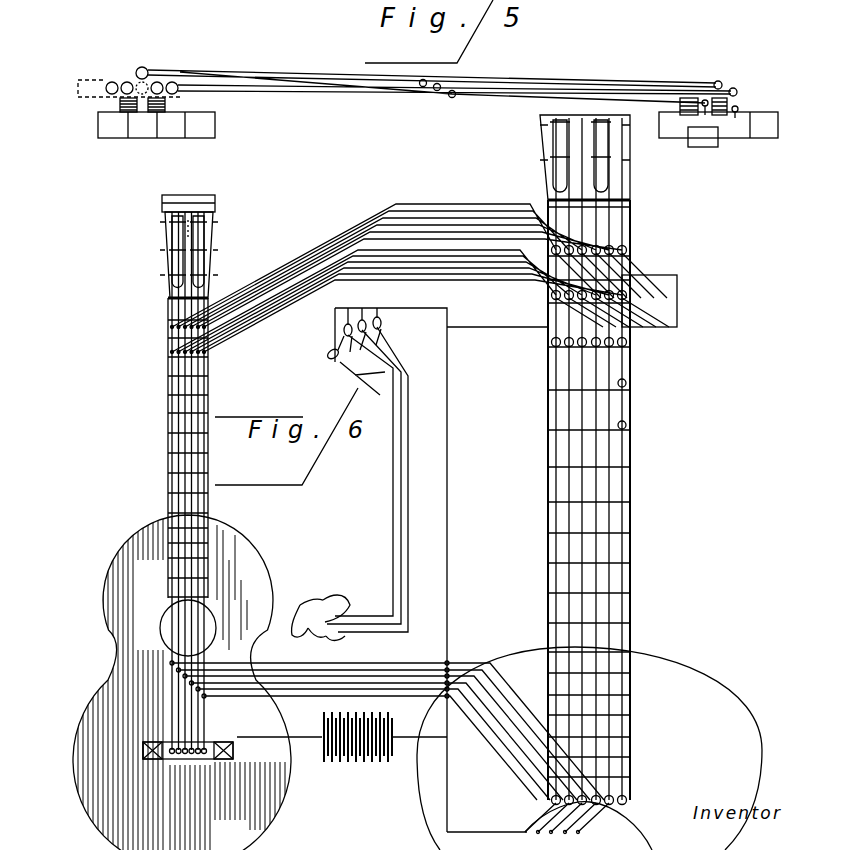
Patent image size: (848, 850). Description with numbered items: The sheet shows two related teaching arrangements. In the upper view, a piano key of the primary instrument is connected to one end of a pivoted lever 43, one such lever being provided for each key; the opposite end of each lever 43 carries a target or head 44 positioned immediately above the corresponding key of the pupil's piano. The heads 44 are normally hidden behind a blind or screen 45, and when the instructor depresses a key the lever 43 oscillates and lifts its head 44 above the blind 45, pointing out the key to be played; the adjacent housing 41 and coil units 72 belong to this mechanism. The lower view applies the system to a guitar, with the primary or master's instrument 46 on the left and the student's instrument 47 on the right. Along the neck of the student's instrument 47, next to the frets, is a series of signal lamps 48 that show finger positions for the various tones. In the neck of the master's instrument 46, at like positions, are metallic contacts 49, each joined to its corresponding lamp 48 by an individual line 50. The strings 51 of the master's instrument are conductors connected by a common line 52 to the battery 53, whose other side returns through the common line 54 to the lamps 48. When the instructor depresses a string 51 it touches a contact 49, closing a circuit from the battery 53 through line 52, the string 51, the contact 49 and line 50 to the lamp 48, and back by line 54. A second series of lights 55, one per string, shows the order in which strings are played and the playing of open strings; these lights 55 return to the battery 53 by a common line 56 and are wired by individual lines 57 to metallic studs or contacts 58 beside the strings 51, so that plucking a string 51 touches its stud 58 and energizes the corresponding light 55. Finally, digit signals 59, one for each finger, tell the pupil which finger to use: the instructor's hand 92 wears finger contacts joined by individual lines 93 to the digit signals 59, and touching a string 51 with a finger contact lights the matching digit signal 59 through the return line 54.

In FIG. 5, the resistance unit 41 is at (764, 133).
In FIG. 5, the pivoted lever 43 is at (321, 66).
In FIG. 5, the target or head 44 is at (131, 68).
In FIG. 5, the blind or screen 45 is at (93, 93).
In FIG. 5, the electromagnet coils 72 is at (183, 100).
In FIG. 6, the primary or master's instrument 46 is at (120, 662).
In FIG. 6, the student's instrument 47 is at (687, 653).
In FIG. 6, the signal lamps 48 is at (628, 262).
In FIG. 6, the metallic contacts 49 is at (175, 329).
In FIG. 6, the individual line 50 is at (453, 217).
In FIG. 6, the strings 51 is at (185, 467).
In FIG. 6, the common line 52 is at (215, 735).
In FIG. 6, the battery 53 is at (342, 749).
In FIG. 6, the common return line 54 is at (453, 607).
In FIG. 6, the second series of lights 55 is at (627, 800).
In FIG. 6, the common line 56 is at (447, 803).
In FIG. 6, the individual lines 57 is at (483, 715).
In FIG. 6, the metallic studs or contacts 58 is at (175, 668).
In FIG. 6, the digit signals 59 is at (333, 353).
In FIG. 6, the hand 92 is at (357, 562).
In FIG. 6, the individual lines 93 is at (408, 510).